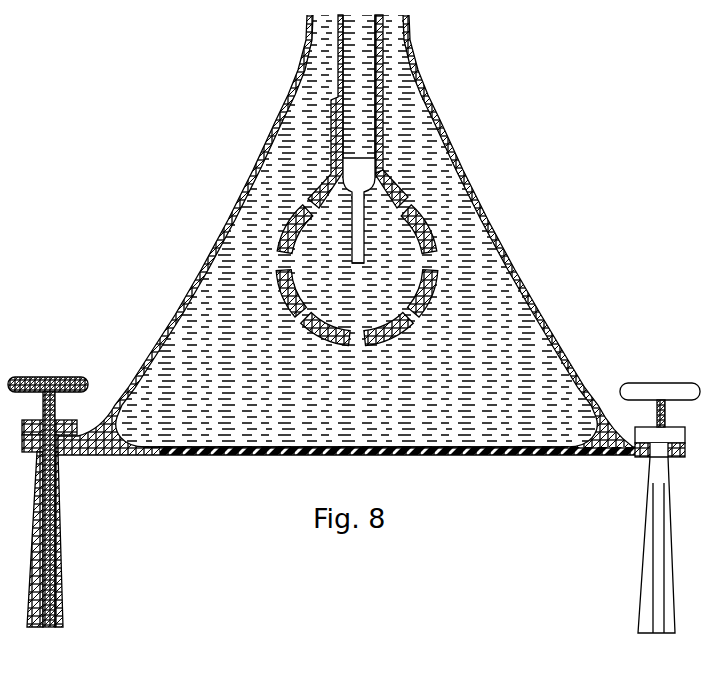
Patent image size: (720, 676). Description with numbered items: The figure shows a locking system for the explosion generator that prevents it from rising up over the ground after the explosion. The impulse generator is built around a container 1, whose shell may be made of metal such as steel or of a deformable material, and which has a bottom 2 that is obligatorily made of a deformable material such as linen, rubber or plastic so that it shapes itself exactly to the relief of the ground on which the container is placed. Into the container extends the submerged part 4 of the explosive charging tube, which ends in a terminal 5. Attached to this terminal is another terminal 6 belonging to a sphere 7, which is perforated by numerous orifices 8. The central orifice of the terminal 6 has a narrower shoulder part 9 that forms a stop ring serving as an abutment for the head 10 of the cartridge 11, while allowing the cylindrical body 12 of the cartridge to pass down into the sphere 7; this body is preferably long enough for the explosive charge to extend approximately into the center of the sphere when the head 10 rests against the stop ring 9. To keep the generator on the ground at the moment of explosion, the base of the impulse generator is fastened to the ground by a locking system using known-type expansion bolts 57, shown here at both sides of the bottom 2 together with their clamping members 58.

The container 1 is at (438, 128).
The bottom 2 is at (427, 455).
The submerged part 4 is at (380, 67).
The terminal 5 is at (383, 116).
The terminal 6 is at (383, 173).
The sphere 7 is at (423, 234).
The orifices 8 is at (353, 341).
The shoulder part 9 is at (378, 192).
The head 10 is at (355, 161).
The cartridge 11 is at (364, 257).
The cylindrical body 12 is at (352, 243).
The expansion bolts 57 is at (686, 538).
The clamp screw 58 is at (692, 425).